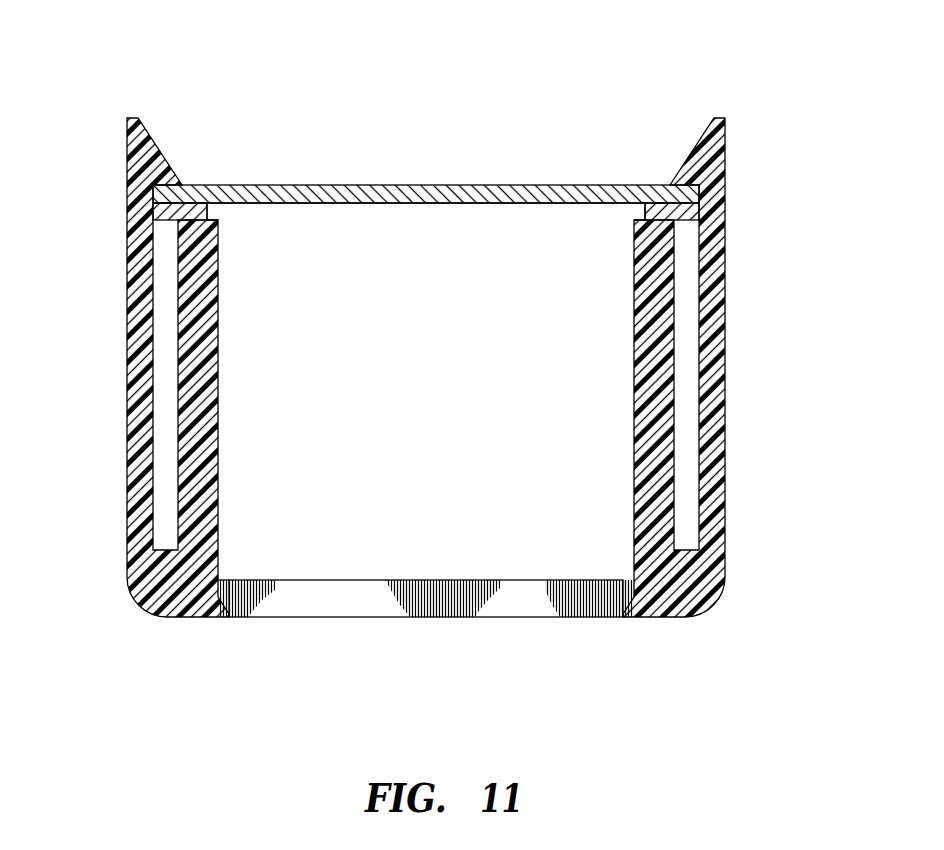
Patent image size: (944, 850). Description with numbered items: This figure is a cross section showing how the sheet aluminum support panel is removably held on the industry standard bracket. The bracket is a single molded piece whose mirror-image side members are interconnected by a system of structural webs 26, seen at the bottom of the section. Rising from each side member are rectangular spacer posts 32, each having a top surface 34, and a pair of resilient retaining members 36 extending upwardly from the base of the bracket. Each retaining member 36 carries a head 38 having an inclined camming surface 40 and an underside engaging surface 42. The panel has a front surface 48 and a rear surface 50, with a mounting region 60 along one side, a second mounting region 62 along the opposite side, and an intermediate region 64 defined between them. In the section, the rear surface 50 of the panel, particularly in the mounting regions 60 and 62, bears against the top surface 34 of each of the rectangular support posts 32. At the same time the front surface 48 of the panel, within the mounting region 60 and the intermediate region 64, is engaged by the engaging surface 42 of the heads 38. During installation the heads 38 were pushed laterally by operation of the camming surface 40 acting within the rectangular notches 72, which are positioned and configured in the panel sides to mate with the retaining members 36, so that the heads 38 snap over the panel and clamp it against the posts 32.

The structural webs 26 is at (437, 603).
The rectangular spacer posts 32 is at (213, 440).
The top surfaces 34 is at (213, 212).
The resilient retaining members 36 is at (127, 343).
The head 38 is at (752, 184).
The inclined camming surface 40 is at (150, 142).
The underside engaging surface 42 is at (197, 183).
The front surface 48 is at (395, 185).
The rear surface 50 is at (366, 203).
The mounting region 60 is at (245, 184).
The mounting region 62 is at (593, 185).
The intermediate region 64 is at (427, 184).
The rectangular notches 72 is at (128, 184).